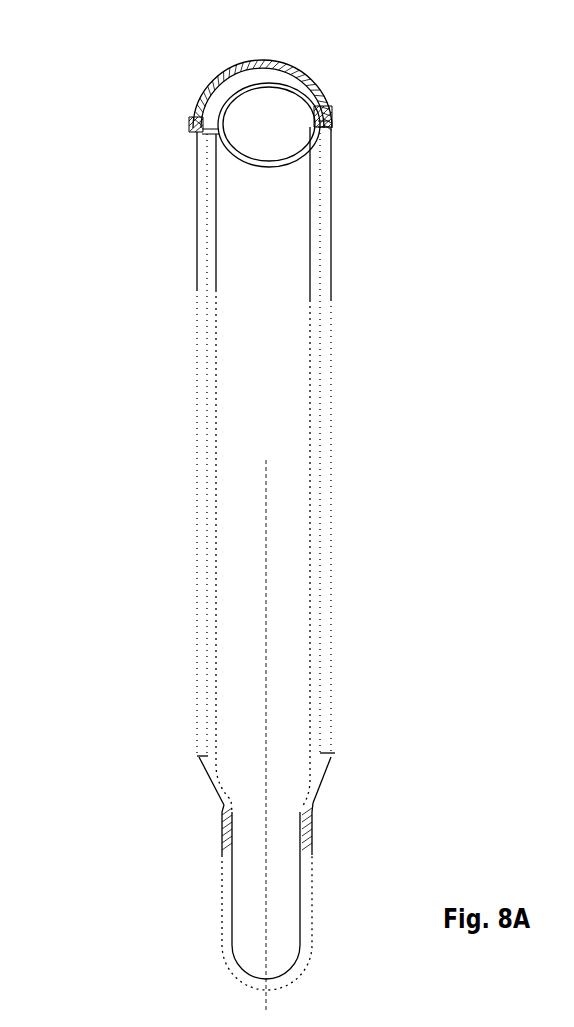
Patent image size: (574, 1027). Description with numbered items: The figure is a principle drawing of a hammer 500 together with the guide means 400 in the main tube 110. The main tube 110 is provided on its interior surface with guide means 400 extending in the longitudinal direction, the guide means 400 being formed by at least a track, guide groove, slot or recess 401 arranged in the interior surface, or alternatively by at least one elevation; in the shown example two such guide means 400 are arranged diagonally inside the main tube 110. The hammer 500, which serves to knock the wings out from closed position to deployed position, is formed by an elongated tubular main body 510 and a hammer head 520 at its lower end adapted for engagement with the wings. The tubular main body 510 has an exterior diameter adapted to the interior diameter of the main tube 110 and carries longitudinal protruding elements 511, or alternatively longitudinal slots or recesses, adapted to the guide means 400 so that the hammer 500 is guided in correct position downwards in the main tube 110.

The main tube 110 is at (328, 236).
The guide means 400 is at (195, 118).
The guide groove 401 is at (190, 136).
The hammer 500 is at (311, 357).
The tubular main body 510 is at (302, 546).
The longitudinal protruding elements 511 is at (332, 102).
The hammer head 520 is at (295, 882).